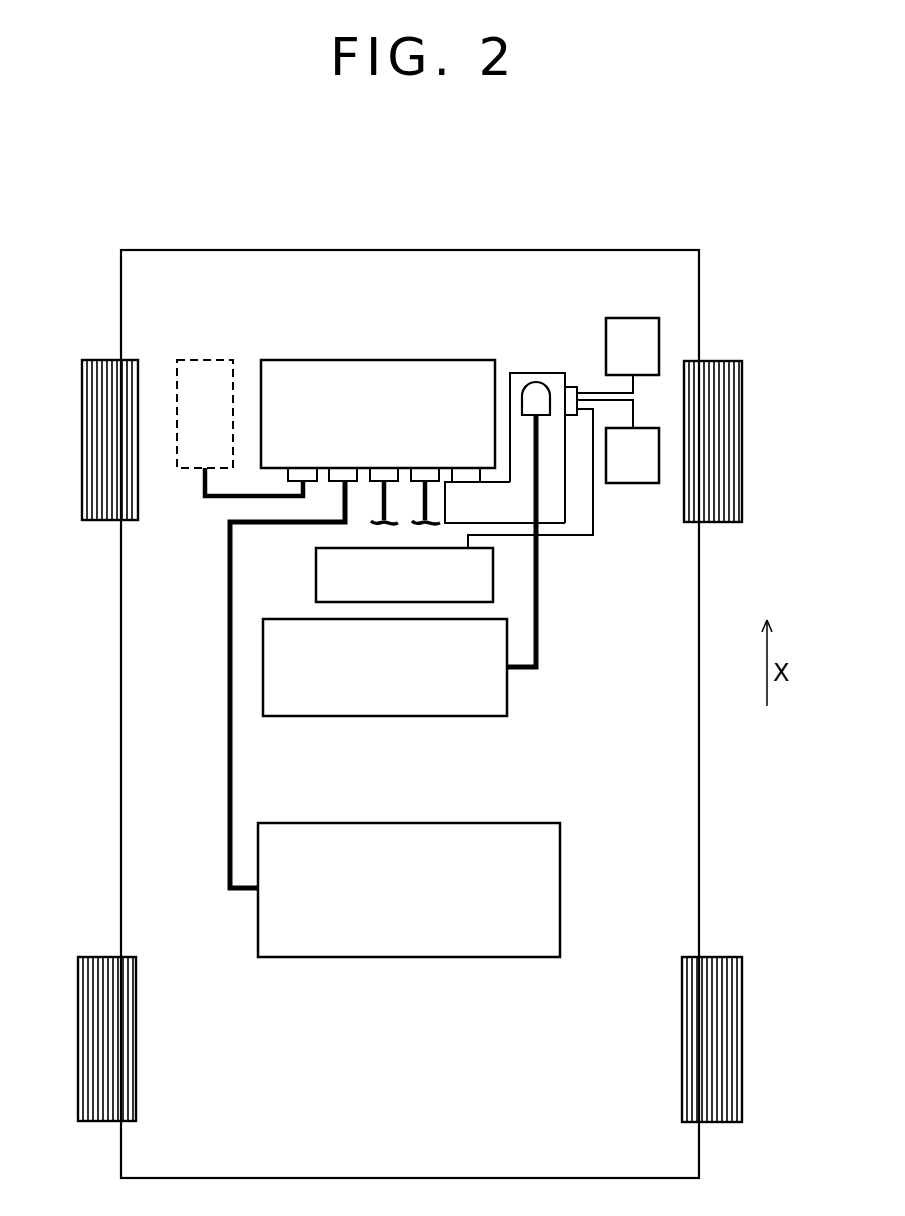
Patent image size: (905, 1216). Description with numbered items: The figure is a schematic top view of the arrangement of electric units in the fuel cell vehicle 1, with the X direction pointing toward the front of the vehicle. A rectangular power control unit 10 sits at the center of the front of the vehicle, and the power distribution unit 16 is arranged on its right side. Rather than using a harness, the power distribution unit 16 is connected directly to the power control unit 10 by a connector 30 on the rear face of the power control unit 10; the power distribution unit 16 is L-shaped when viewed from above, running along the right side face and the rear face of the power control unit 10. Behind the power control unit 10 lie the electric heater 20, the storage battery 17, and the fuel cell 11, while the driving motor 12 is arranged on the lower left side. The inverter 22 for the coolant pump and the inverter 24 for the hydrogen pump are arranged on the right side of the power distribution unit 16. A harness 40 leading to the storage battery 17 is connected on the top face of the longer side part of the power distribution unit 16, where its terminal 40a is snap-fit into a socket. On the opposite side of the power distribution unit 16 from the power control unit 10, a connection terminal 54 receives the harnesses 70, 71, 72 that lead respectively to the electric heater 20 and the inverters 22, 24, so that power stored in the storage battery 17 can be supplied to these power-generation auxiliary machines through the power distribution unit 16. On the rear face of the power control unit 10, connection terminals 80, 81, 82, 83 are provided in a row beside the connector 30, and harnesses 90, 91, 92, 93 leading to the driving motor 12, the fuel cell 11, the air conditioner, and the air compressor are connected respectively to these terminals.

The fuel cell vehicle 1 is at (434, 217).
The power control unit 10 is at (345, 359).
The fuel cell 11 is at (560, 898).
The driving motor 12 is at (205, 358).
The power distribution unit 16 is at (523, 373).
The storage battery 17 is at (507, 700).
The electric heater 20 is at (493, 572).
The inverter for coolant pump 22 is at (632, 318).
The inverter for hydrogen pump 24 is at (633, 484).
The connector 30 is at (467, 468).
The harness 40 is at (536, 623).
The terminal of harness 40a is at (548, 388).
The connection terminal 54 is at (572, 387).
The harness 70 is at (582, 537).
The harness 71 is at (633, 385).
The harness 72 is at (633, 415).
The connection terminal 80 is at (306, 468).
The connection terminal 81 is at (347, 468).
The connection terminal 82 is at (390, 468).
The connection terminal 83 is at (432, 468).
The harness 90 is at (202, 483).
The harness 91 is at (228, 727).
The harness 92 is at (382, 503).
The harness 93 is at (423, 500).